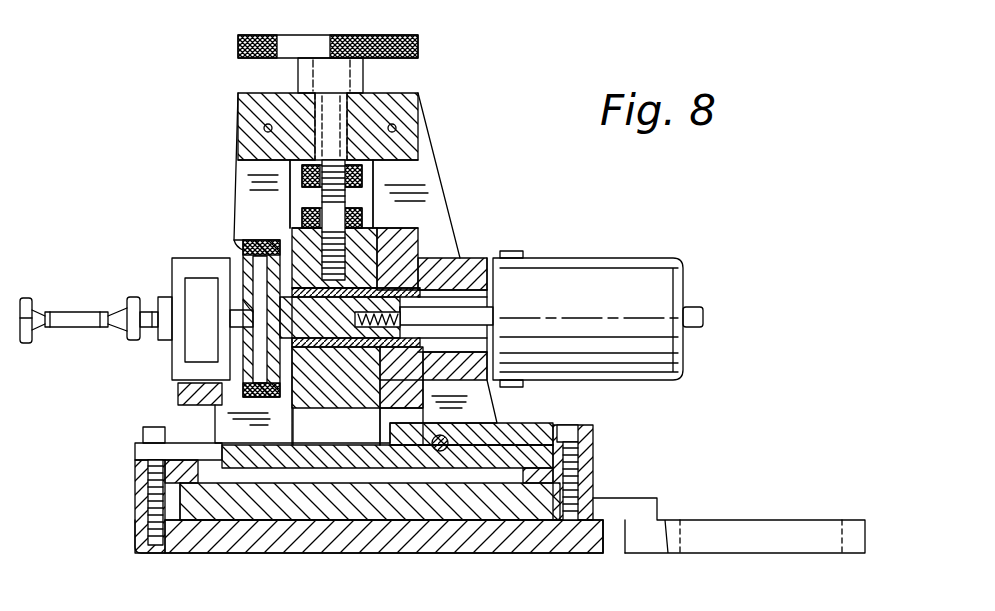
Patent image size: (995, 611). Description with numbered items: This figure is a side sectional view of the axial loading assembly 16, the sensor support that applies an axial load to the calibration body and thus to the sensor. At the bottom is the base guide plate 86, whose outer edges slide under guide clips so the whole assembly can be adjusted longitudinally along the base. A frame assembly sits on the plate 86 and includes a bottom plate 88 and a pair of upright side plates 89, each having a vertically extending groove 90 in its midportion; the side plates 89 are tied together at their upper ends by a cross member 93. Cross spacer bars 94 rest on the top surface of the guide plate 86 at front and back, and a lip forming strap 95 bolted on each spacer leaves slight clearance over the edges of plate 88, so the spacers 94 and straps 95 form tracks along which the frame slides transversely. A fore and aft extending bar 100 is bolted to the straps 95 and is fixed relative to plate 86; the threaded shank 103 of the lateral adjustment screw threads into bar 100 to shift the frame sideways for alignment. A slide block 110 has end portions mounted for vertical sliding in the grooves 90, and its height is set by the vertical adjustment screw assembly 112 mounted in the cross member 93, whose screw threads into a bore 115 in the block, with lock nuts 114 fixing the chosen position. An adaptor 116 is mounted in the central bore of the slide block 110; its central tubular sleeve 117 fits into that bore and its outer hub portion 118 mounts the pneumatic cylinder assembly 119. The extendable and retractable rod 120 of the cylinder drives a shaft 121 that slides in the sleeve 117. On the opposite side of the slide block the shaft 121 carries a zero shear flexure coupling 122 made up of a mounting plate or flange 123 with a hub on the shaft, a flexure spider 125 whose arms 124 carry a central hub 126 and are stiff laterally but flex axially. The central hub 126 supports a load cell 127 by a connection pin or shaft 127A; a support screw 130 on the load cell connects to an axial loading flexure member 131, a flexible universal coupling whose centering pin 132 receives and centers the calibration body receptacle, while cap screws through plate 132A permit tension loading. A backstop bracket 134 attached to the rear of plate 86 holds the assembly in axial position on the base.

The axial loading assembly 16 is at (236, 84).
The base guide plate 86 is at (237, 530).
The bottom plate 88 is at (532, 513).
The upright side plates 89 is at (449, 233).
The vertically extending groove 90 is at (367, 192).
The cross member 93 is at (428, 119).
The cross spacer bars 94 is at (140, 492).
The lip forming strap 95 is at (143, 450).
The fore and aft extending bar 100 is at (472, 458).
The threaded shank 103 is at (448, 440).
The slide block 110 is at (358, 393).
The vertical adjustment screw assembly 112 is at (397, 40).
The lock nuts 114 is at (302, 177).
The bore 115 is at (348, 268).
The adaptor 116 is at (468, 257).
The central tubular sleeve 117 is at (342, 411).
The outer hub portion 118 is at (490, 352).
The pneumatic cylinder assembly 119 is at (594, 268).
The extendable and retractable rod 120 is at (473, 317).
The shaft 121 is at (440, 224).
The zero shear flexure coupling 122 is at (240, 243).
The mounting plate or flange 123 is at (243, 246).
The arms 124 is at (186, 378).
The flexure spider 125 is at (243, 300).
The central hub 126 is at (183, 368).
The load cell 127 is at (173, 347).
The connection pin or shaft 127A is at (228, 287).
The support screw 130 is at (135, 300).
The axial loading flexure member 131 is at (55, 330).
The centering pin 132 is at (21, 326).
The plate 132A is at (31, 296).
The backstop bracket 134 is at (695, 528).